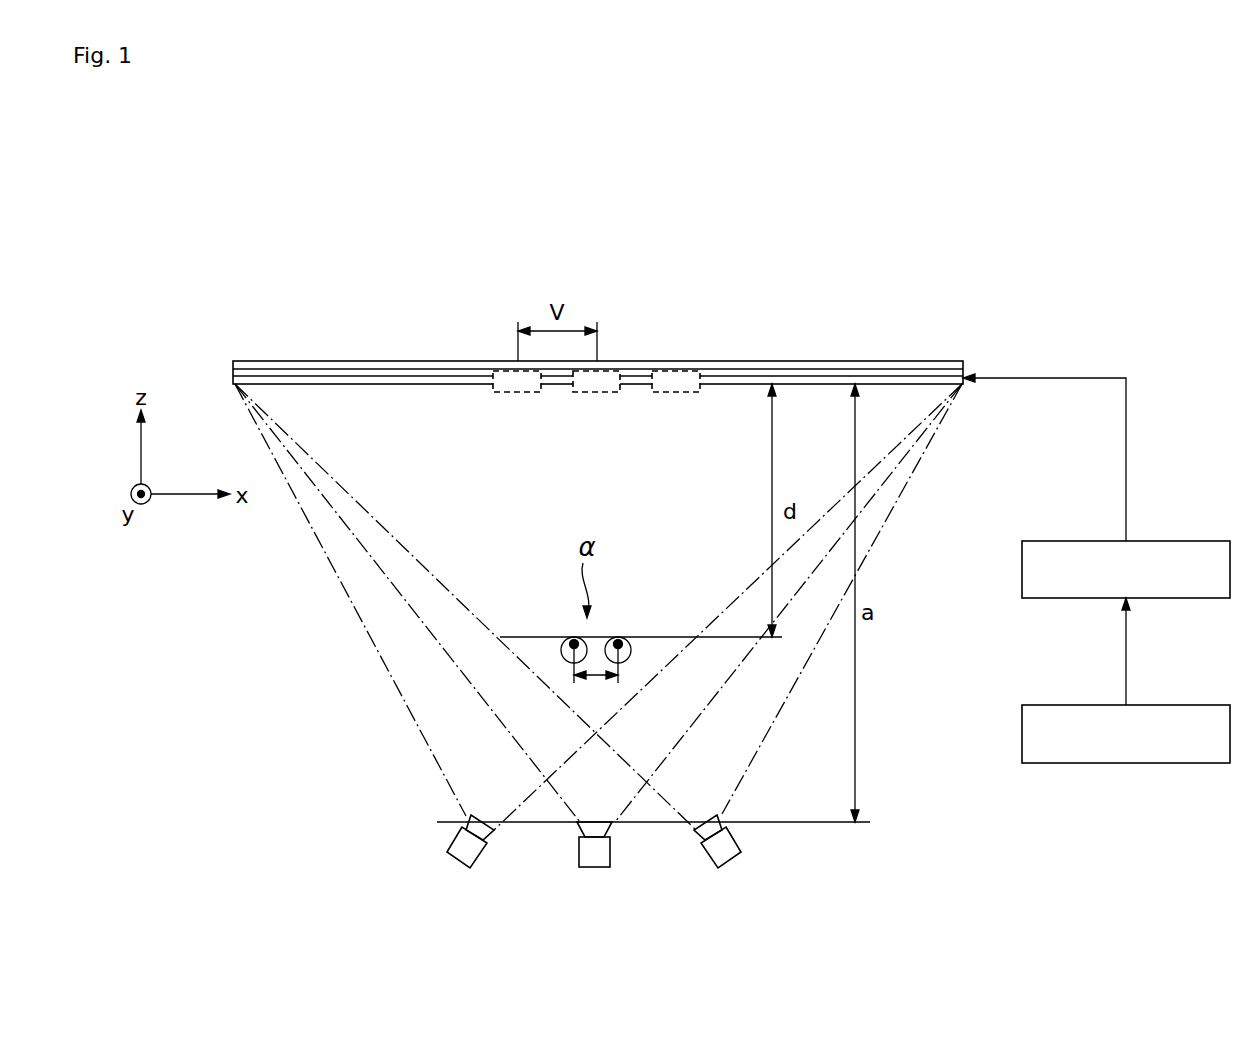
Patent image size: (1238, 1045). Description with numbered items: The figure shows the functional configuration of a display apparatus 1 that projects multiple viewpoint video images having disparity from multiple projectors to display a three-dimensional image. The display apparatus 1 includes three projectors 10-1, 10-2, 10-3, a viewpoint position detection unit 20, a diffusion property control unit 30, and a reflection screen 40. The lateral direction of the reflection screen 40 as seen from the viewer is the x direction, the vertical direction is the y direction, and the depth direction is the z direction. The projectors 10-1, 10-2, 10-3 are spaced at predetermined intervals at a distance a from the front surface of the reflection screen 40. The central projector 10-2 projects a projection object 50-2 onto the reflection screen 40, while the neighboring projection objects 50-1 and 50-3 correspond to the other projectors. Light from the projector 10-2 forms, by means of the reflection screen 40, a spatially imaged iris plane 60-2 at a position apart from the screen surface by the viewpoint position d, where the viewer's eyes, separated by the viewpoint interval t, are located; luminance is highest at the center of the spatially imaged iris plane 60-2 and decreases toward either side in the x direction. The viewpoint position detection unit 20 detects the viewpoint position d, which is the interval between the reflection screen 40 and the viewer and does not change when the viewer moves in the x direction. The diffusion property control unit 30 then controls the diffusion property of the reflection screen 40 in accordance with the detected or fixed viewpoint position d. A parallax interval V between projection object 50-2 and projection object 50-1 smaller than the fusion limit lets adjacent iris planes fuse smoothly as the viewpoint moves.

The display apparatus 1 is at (1028, 293).
The projector 10-1 is at (727, 868).
The projector 10-2 is at (594, 867).
The projector 10-3 is at (462, 868).
The viewpoint position detection unit 20 is at (1196, 705).
The diffusion property control unit 30 is at (1196, 541).
The reflection screen 40 is at (820, 361).
The projection object 50-1 is at (517, 392).
The projection object 50-2 is at (597, 392).
The projection object 50-3 is at (676, 392).
The spatially imaged iris plane 60-2 is at (519, 637).